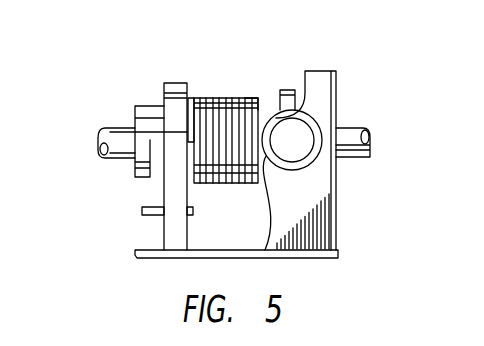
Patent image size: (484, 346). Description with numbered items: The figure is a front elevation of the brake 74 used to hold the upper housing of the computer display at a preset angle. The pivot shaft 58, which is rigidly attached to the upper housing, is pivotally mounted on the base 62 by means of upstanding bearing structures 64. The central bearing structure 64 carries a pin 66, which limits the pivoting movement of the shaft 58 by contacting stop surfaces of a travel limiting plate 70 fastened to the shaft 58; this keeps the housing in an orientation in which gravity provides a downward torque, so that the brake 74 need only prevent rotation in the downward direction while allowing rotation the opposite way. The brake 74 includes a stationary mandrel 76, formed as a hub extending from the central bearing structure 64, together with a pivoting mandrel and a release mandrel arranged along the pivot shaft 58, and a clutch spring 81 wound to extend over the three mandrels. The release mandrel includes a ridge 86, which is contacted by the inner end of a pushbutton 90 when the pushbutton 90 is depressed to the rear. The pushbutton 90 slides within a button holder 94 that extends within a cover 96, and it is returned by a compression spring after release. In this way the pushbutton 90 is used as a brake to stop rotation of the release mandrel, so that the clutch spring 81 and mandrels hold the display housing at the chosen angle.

The pivot shaft 58 is at (352, 128).
The base 62 is at (148, 250).
The bearing structure 64 is at (163, 93).
The pin 66 is at (142, 212).
The travel limiting plate 70 is at (134, 114).
The brake 74 is at (225, 78).
The stationary mandrel 76 is at (188, 83).
The clutch spring 81 is at (255, 100).
The ridge 86 is at (288, 90).
The pushbutton 90 is at (308, 172).
The button holder 94 is at (306, 160).
The cover 96 is at (336, 219).